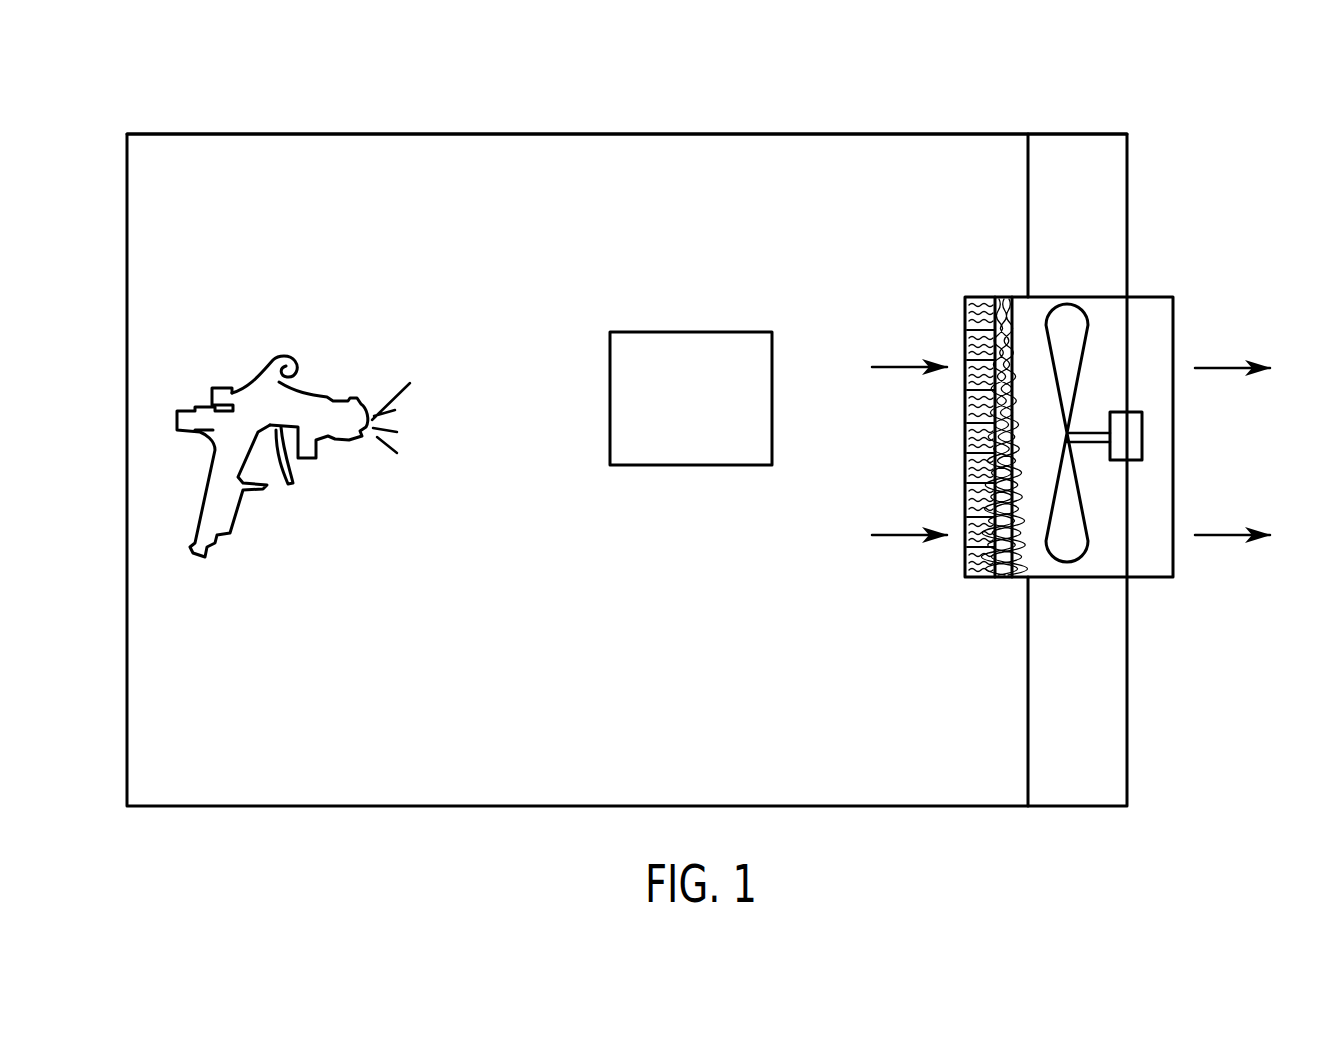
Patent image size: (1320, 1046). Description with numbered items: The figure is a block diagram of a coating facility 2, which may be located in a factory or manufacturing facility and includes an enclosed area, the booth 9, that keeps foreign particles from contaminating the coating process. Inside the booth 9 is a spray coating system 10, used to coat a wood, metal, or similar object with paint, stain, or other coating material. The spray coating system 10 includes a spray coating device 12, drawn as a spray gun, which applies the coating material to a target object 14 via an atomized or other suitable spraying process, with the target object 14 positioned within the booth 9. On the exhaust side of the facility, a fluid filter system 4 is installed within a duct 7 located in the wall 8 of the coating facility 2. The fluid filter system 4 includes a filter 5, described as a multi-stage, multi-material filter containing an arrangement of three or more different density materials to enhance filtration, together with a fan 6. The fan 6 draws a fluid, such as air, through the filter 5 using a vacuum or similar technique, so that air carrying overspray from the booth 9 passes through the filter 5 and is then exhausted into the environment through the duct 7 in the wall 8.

The coating facility 2 is at (700, 74).
The booth 9 is at (468, 133).
The wall 8 is at (1028, 697).
The fluid filter system 4 is at (966, 618).
The filter 5 is at (966, 298).
The fan 6 is at (1067, 342).
The duct 7 is at (1080, 588).
The target object 14 is at (717, 332).
The spray coating system 10 is at (346, 529).
The spray coating device 12 is at (268, 360).